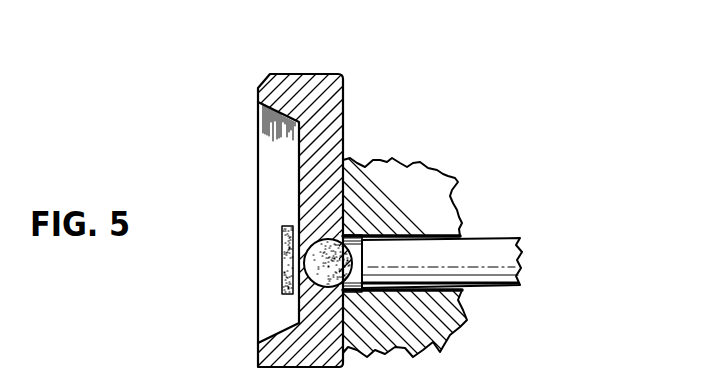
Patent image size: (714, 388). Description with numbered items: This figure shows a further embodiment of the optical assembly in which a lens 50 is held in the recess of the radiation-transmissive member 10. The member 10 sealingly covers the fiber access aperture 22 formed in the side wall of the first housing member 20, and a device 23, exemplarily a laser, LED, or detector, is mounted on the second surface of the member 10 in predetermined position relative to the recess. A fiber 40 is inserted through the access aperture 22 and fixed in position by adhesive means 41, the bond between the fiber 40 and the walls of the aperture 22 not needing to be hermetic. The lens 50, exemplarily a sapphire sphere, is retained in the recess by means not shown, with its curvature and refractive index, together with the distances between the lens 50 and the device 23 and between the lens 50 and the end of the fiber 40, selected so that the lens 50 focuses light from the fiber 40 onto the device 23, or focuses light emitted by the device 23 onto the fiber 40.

The radiation-transmissive member 10 is at (334, 107).
The first member 20 is at (460, 329).
The fiber access aperture 22 is at (474, 290).
The device 23 is at (282, 257).
The fiber 40 is at (519, 268).
The adhesive means 41 is at (462, 234).
The lens 50 is at (328, 240).